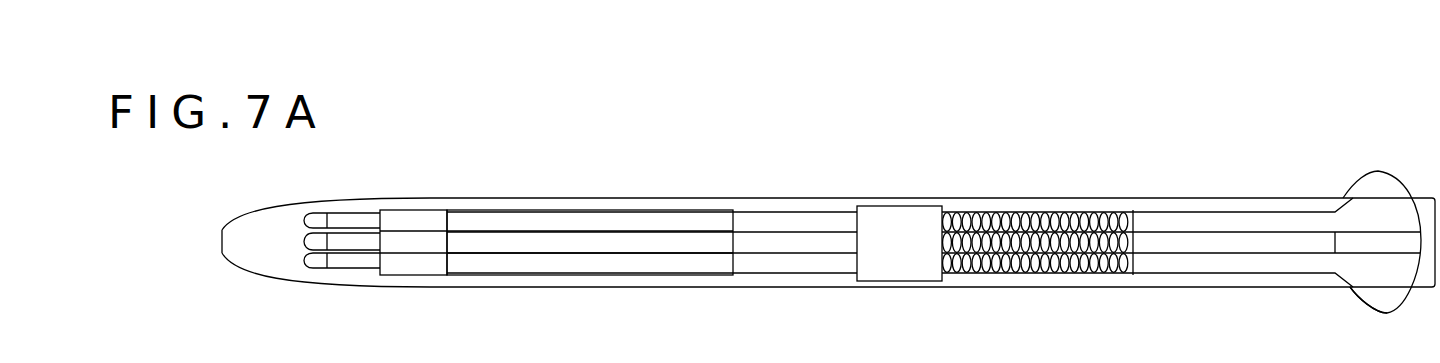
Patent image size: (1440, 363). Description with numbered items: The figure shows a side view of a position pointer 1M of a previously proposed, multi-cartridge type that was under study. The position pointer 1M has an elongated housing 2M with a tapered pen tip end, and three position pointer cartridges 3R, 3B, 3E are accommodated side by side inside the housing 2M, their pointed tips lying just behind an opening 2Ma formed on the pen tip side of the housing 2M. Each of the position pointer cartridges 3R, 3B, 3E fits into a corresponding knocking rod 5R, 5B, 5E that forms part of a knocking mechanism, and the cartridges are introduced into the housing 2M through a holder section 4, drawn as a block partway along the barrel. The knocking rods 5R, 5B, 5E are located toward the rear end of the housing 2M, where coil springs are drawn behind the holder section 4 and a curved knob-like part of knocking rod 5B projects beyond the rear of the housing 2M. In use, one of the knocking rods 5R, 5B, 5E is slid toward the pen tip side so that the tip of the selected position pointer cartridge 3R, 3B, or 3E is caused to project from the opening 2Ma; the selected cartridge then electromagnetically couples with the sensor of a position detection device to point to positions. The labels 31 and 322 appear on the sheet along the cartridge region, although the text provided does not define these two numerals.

The position pointer 1M is at (791, 202).
The housing 2M is at (838, 204).
The opening 2Ma is at (221, 241).
The position pointer cartridge 3R is at (342, 237).
The position pointer cartridge 3B is at (368, 222).
The position pointer cartridge 3E is at (350, 260).
The refill holder 31 is at (413, 286).
The refill body 322 is at (858, 286).
The holder section 4 is at (907, 215).
The knocking rod 5R is at (1368, 243).
The knocking rod 5B is at (1386, 186).
The knocking rod 5E is at (1374, 298).